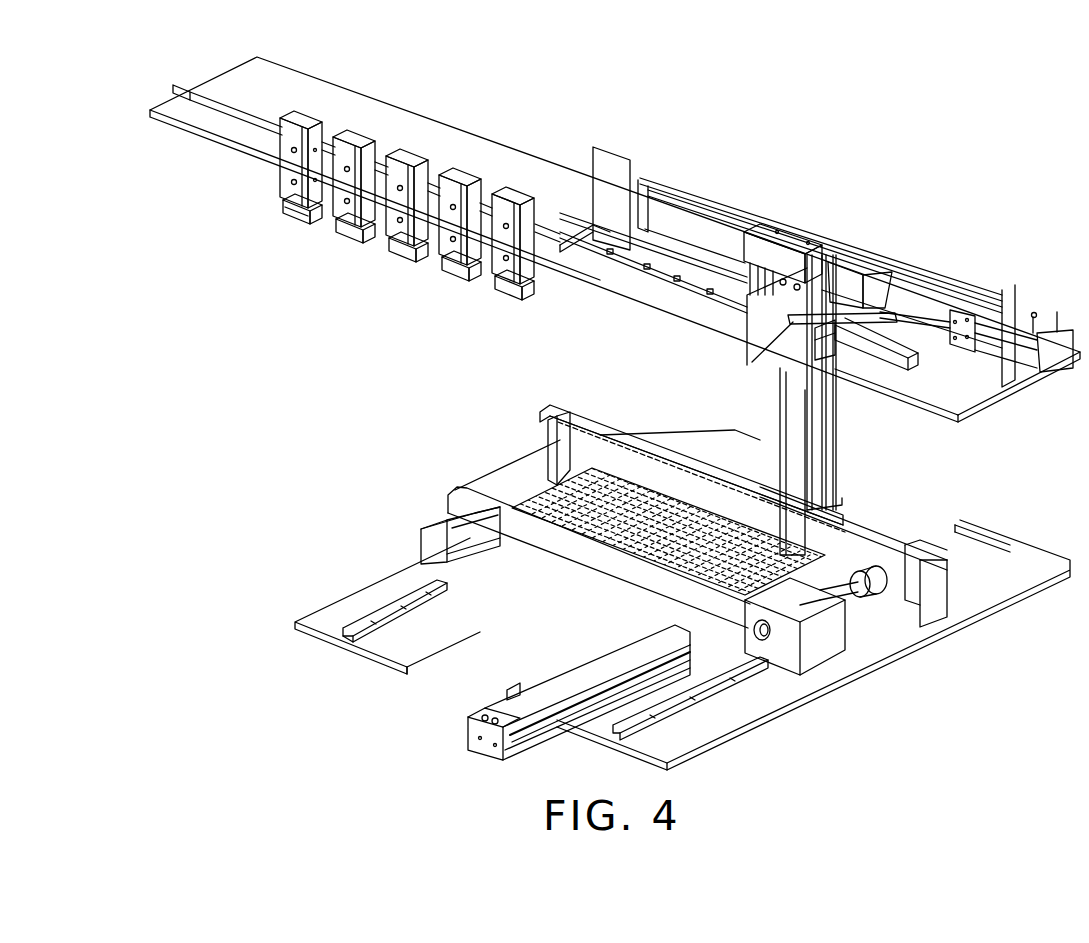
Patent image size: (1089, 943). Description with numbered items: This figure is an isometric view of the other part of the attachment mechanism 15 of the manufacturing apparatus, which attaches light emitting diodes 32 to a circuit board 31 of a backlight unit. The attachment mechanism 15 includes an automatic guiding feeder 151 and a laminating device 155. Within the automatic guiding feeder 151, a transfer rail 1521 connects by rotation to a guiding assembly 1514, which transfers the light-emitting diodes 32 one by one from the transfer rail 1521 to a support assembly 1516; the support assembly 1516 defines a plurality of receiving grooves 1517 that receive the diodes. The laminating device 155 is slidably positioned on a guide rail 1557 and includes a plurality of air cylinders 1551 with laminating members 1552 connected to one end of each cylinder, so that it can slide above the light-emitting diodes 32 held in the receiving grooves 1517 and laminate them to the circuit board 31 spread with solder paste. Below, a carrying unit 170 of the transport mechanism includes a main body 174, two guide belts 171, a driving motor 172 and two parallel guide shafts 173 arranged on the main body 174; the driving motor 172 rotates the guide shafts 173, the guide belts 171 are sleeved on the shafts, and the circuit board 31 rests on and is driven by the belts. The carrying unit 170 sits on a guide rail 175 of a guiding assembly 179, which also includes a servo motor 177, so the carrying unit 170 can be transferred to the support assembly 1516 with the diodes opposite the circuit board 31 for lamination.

The attachment mechanism 15 is at (833, 93).
The automatic guiding feeder 151 is at (800, 228).
The guiding assembly 1514 is at (783, 367).
The support assembly 1516 is at (575, 415).
The receiving grooves 1517 is at (642, 437).
The transfer rail 1521 is at (877, 305).
The laminating device 155 is at (340, 248).
The air cylinders 1551 is at (297, 165).
The laminating members 1552 is at (297, 212).
The guide rail 1557 is at (627, 247).
The carrying unit 170 is at (497, 447).
The guide belts 171 is at (857, 557).
The driving motor 172 is at (437, 542).
The guide shafts 173 is at (862, 590).
The main body 174 is at (837, 637).
The guide rail 175 is at (680, 646).
The servo motor 177 is at (473, 727).
The guiding assembly 179 is at (453, 657).
The circuit board 31 is at (543, 490).
The light emitting diodes 32 is at (533, 510).